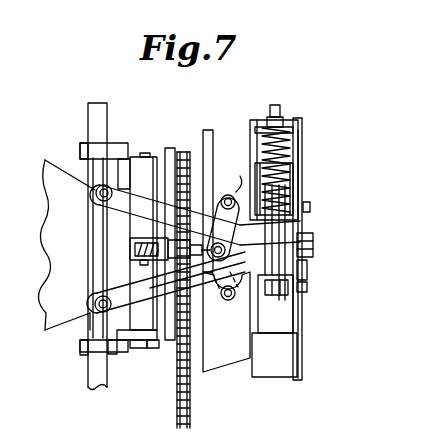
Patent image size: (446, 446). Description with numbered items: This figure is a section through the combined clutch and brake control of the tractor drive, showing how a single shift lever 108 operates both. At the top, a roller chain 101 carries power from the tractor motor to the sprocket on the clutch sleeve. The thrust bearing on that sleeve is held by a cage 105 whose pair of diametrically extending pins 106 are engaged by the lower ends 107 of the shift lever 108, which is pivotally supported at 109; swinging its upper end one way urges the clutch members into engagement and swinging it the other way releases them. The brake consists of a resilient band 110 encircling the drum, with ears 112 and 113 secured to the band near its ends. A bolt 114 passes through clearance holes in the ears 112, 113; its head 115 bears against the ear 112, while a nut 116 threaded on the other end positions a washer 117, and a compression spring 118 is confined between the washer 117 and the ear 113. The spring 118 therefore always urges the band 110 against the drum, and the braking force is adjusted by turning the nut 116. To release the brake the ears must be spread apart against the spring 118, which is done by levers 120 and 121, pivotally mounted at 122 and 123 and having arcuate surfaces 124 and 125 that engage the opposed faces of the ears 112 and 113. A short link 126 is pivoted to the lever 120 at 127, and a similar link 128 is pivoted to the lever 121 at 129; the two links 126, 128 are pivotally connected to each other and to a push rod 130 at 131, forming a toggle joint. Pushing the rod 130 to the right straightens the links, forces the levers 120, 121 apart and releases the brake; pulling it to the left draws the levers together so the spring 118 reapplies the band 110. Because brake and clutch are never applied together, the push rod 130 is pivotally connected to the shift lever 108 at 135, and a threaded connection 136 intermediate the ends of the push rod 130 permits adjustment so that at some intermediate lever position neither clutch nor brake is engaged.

The roller chain 101 is at (192, 402).
The cage 105 is at (160, 345).
The pins 106 is at (147, 173).
The lower ends 107 is at (168, 150).
The shift lever 108 is at (130, 246).
The pivot 109 is at (125, 150).
The resilient band 110 is at (292, 380).
The ear 112 is at (300, 315).
The ear 113 is at (295, 198).
The bolt 114 is at (280, 107).
The head 115 is at (305, 295).
The nut 116 is at (290, 132).
The washer 117 is at (295, 135).
The compression spring 118 is at (293, 173).
The lever 120 is at (105, 305).
The lever 121 is at (120, 200).
The pivot 122 is at (93, 316).
The pivot 123 is at (96, 176).
The arcuate surface 124 is at (297, 273).
The arcuate surface 125 is at (308, 212).
The short link 126 is at (256, 305).
The pivot 127 is at (229, 301).
The link 128 is at (234, 189).
The pivot 129 is at (240, 188).
The push rod 130 is at (197, 280).
The toggle joint pivot 131 is at (308, 237).
The pivotal connection 135 is at (140, 262).
The threaded connection means 136 is at (227, 233).